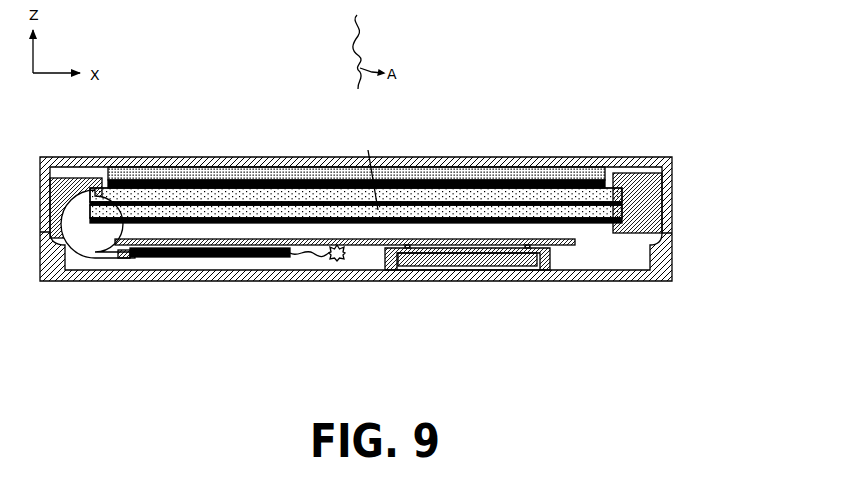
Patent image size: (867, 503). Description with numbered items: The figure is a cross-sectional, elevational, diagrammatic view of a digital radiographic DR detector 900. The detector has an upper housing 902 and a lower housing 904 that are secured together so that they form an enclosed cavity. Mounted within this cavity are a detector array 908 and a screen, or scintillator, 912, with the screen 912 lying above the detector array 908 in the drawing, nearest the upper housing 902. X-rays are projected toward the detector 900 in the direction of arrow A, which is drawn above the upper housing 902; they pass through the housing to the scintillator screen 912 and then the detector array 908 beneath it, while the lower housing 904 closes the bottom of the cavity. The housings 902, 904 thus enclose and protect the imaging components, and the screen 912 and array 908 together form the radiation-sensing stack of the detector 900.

The DR detector 900 is at (665, 92).
The upper housing 902 is at (48, 157).
The lower housing 904 is at (165, 281).
The detector array 908 is at (295, 192).
The screen (scintillator) 912 is at (211, 167).